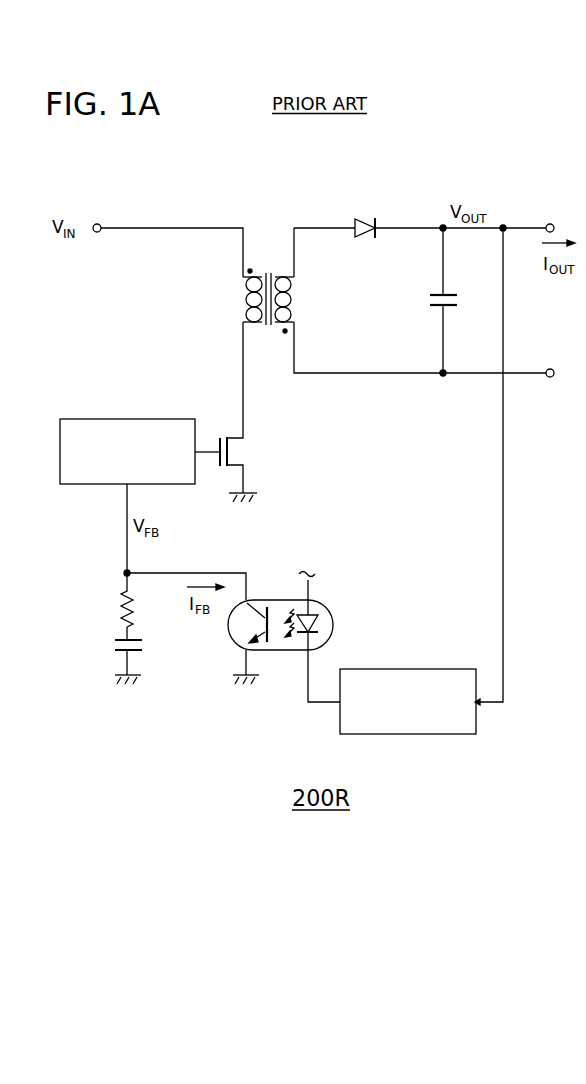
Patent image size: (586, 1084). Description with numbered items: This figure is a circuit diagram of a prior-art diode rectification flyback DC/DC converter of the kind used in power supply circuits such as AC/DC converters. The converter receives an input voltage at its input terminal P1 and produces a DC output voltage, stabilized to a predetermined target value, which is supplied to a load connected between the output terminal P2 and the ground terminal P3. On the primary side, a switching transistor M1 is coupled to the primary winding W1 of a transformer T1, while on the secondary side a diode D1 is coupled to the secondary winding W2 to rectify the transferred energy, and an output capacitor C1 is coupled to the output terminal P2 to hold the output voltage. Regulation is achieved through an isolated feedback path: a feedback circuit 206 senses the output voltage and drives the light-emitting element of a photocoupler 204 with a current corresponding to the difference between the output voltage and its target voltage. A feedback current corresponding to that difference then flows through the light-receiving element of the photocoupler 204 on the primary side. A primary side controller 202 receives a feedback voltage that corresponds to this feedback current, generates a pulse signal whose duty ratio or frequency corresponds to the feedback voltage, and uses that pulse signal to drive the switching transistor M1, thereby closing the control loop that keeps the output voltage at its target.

The input terminal P1 is at (97, 222).
The output terminal P2 is at (550, 223).
The ground terminal P3 is at (550, 378).
The transformer T1 is at (270, 263).
The primary winding W1 is at (238, 298).
The secondary winding W2 is at (301, 298).
The diode D1 is at (364, 210).
The output capacitor C1 is at (427, 305).
The switching transistor M1 is at (256, 448).
The primary side controller 202 is at (143, 418).
The photocoupler 204 is at (278, 600).
The feedback circuit 206 is at (423, 669).